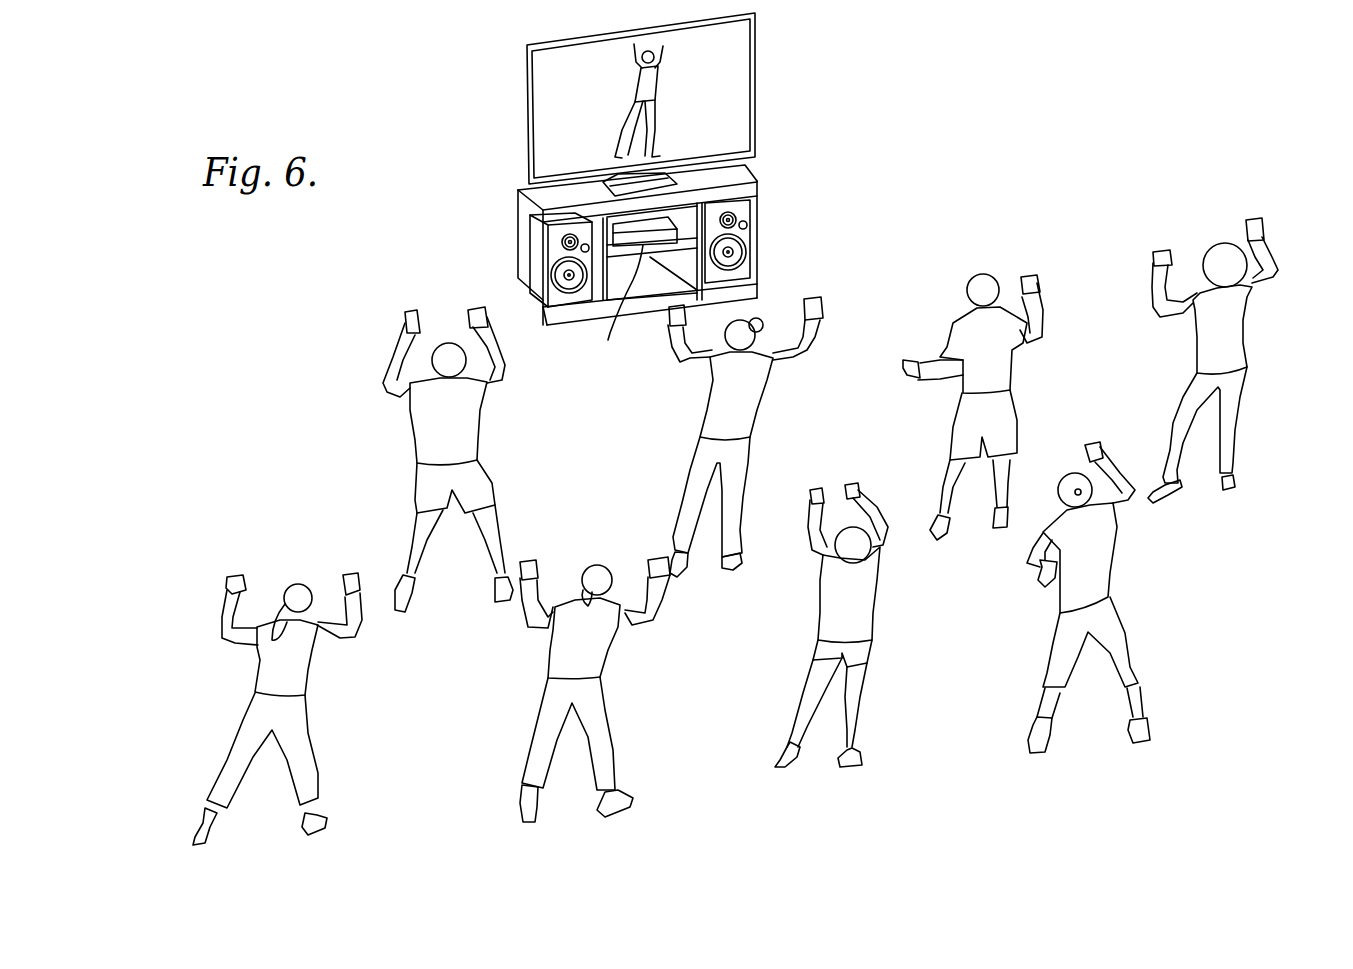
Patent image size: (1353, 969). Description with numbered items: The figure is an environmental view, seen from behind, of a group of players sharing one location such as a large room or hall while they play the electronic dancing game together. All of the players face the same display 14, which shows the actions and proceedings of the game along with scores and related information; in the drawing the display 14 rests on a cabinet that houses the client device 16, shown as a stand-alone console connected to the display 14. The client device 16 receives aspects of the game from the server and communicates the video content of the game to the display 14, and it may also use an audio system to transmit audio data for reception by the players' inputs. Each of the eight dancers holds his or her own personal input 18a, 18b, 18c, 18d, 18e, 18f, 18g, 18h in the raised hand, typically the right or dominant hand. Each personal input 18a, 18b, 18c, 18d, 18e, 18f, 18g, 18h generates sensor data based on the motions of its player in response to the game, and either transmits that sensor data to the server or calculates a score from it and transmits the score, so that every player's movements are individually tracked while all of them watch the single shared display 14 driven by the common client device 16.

The display 14 is at (737, 52).
The client device 16 is at (637, 266).
The personal input 18a is at (250, 568).
The personal input 18b is at (646, 551).
The personal input 18c is at (846, 476).
The personal input 18d is at (1071, 445).
The personal input 18e is at (464, 306).
The personal input 18f is at (813, 288).
The personal input 18g is at (1013, 265).
The personal input 18h is at (1173, 243).